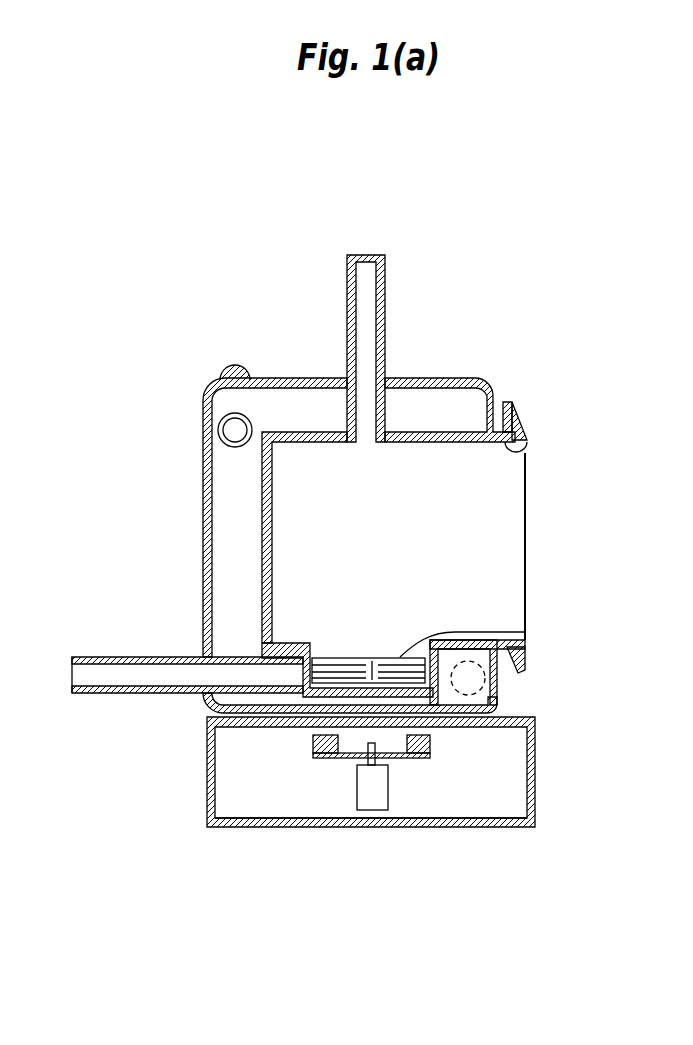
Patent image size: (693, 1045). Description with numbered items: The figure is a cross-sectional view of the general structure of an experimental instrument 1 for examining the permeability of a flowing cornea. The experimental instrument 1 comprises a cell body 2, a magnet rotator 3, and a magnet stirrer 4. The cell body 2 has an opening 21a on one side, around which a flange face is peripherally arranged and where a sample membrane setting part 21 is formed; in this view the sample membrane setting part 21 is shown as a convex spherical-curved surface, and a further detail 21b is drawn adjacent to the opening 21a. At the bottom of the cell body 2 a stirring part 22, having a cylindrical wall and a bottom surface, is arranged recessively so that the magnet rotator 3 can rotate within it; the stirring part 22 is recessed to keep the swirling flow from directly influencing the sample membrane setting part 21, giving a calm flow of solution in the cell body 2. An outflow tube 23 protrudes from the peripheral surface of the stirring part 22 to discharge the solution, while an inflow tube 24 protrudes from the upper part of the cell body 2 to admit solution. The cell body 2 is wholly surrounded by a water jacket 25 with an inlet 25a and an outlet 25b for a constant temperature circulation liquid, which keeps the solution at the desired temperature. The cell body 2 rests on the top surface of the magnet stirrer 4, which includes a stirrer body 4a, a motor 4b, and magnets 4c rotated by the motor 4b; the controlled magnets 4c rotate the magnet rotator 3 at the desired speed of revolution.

The experimental instrument 1 is at (244, 213).
The cell body 2 is at (443, 427).
The magnet rotator 3 is at (383, 658).
The magnet stirrer 4 is at (535, 760).
The stirrer body 4a is at (237, 828).
The motor 4b is at (388, 792).
The magnets 4c is at (316, 748).
The sample membrane setting part 21 is at (616, 378).
The opening 21a is at (526, 450).
The engaging tab 21b is at (513, 410).
The stirring part 22 is at (485, 640).
The outflow tube 23 is at (105, 693).
The inflow tube 24 is at (387, 262).
The water jacket 25 is at (203, 478).
The inlet of constant temperature circulation liquid 25a is at (480, 690).
The outlet of constant temperature circulation liquid 25b is at (237, 375).